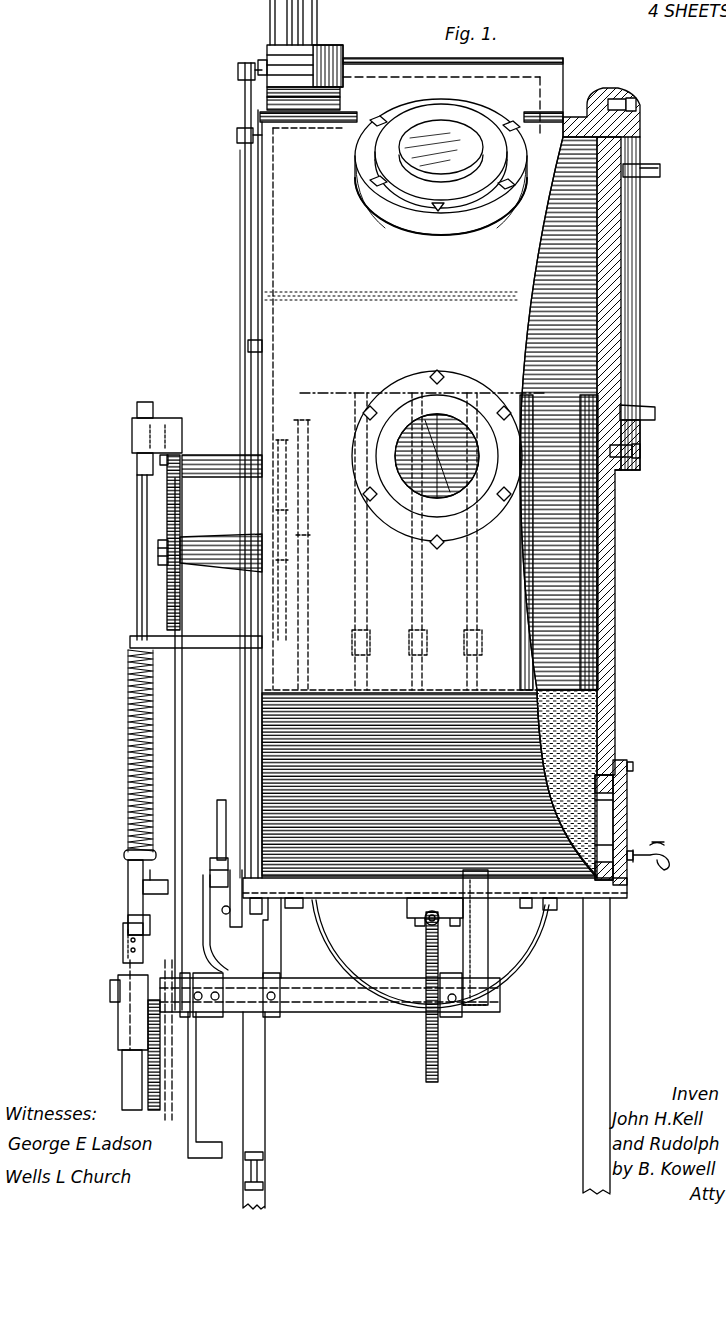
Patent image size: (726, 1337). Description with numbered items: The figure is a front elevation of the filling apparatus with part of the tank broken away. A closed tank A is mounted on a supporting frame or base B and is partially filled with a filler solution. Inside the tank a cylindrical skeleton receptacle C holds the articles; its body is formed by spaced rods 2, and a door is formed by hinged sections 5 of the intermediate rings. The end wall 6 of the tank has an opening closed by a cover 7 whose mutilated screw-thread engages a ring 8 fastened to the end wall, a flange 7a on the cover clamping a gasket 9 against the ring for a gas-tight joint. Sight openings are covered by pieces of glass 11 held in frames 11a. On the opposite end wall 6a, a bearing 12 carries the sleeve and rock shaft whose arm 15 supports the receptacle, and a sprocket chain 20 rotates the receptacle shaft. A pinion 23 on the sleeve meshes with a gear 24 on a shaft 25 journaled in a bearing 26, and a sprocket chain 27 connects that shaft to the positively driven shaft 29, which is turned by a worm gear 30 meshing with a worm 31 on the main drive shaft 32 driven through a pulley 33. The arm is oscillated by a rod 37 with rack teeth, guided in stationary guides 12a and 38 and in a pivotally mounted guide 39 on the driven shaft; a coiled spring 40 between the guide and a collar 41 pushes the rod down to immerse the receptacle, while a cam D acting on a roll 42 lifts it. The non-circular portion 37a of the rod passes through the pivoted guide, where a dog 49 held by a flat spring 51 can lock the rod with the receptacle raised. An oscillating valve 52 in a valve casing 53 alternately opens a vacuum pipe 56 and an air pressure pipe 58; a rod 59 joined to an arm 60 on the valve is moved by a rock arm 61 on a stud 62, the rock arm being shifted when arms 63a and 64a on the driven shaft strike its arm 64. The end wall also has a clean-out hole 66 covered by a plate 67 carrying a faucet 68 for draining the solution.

The closed tank or casing A is at (410, 468).
The supporting frame or base B is at (262, 1100).
The carrier or receptacle C is at (585, 506).
The cam D is at (150, 1090).
The rods 2 is at (525, 398).
The hinged sections 5 is at (413, 425).
The end wall of the tank 6 is at (608, 591).
The end wall of the tank 6a is at (258, 346).
The cover 7 is at (616, 300).
The flange 7a is at (632, 430).
The ring 8 is at (630, 124).
The gasket 9 is at (641, 152).
The pieces of glass 11 is at (425, 140).
The frames 11a is at (408, 200).
The bearing 12 is at (207, 478).
The stationary guide 12a is at (166, 427).
The arm 15 is at (295, 432).
The sprocket chain 20 is at (283, 491).
The pinion 23 is at (183, 458).
The gear 24 is at (167, 513).
The shaft 25 is at (158, 552).
The bearing 26 is at (221, 568).
The sprocket chain 27 is at (183, 702).
The positively driven shaft 29 is at (345, 1012).
The worm gear 30 is at (438, 1062).
The worm 31 is at (468, 915).
The main drive shaft 32 is at (427, 921).
The pulley 33 is at (518, 977).
The rod or bar 37 is at (139, 612).
The non-circular portion 37a is at (133, 884).
The stationary guide 38 is at (133, 642).
The pivotally mounted guide 39 is at (124, 1040).
The coiled spring 40 is at (130, 727).
The collar 41 is at (126, 855).
The roll 42 is at (148, 872).
The dog 49 is at (132, 915).
The flat spring 51 is at (124, 950).
The oscillating valve 52 is at (262, 64).
The valve casing 53 is at (305, 66).
The vacuum pipe 56 is at (275, 20).
The air pressure pipe 58 is at (314, 22).
The rod 59 is at (247, 280).
The arm 60 is at (245, 104).
The rock arm 61 is at (233, 928).
The stud or shaft 62 is at (221, 858).
The arm 63a is at (208, 926).
The arm 64 is at (220, 808).
The arm 64a is at (192, 1088).
The clean-out hole 66 is at (612, 802).
The plate 67 is at (628, 823).
The faucet 68 is at (670, 857).